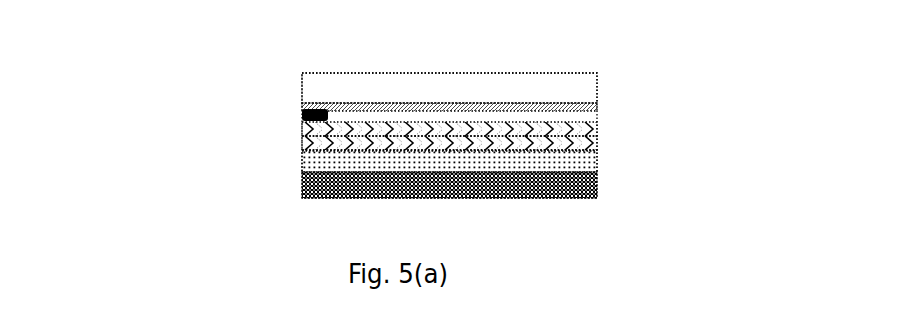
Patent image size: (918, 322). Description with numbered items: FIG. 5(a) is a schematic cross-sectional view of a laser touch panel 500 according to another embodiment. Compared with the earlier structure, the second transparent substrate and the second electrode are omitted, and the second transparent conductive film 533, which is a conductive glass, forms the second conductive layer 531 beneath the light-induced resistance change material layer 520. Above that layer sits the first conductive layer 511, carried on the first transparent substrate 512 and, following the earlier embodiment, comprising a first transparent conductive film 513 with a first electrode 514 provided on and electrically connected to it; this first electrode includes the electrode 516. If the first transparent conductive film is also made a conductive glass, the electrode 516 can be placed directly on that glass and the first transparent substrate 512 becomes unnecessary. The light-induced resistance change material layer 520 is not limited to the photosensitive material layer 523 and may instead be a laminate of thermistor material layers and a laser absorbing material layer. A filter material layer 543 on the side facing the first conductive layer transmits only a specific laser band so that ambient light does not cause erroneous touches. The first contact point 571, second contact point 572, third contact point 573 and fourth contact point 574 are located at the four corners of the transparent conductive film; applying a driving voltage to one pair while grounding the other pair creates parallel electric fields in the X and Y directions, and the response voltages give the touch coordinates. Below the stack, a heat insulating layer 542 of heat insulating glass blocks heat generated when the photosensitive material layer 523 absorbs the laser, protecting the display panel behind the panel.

The laser touch panel 500 is at (565, 37).
The polarizing member 511 is at (136, 53).
The window 512 is at (597, 89).
The light shielding layer 513 is at (302, 108).
The protective film 514 is at (370, 99).
The electrode 516 is at (302, 112).
The light-induced resistance change material layer 520 is at (525, 151).
The photosensitive material layer 523 is at (597, 142).
The phase retardation layer 543 is at (597, 128).
The first contact point 571 is at (296, 142).
The second contact point 572 is at (302, 152).
The third contact point 573 is at (599, 169).
The fourth contact point 574 is at (594, 151).
The display panel substrate 531 is at (370, 163).
The second transparent conductive film 533 is at (302, 164).
The heat insulating layer 542 is at (302, 184).